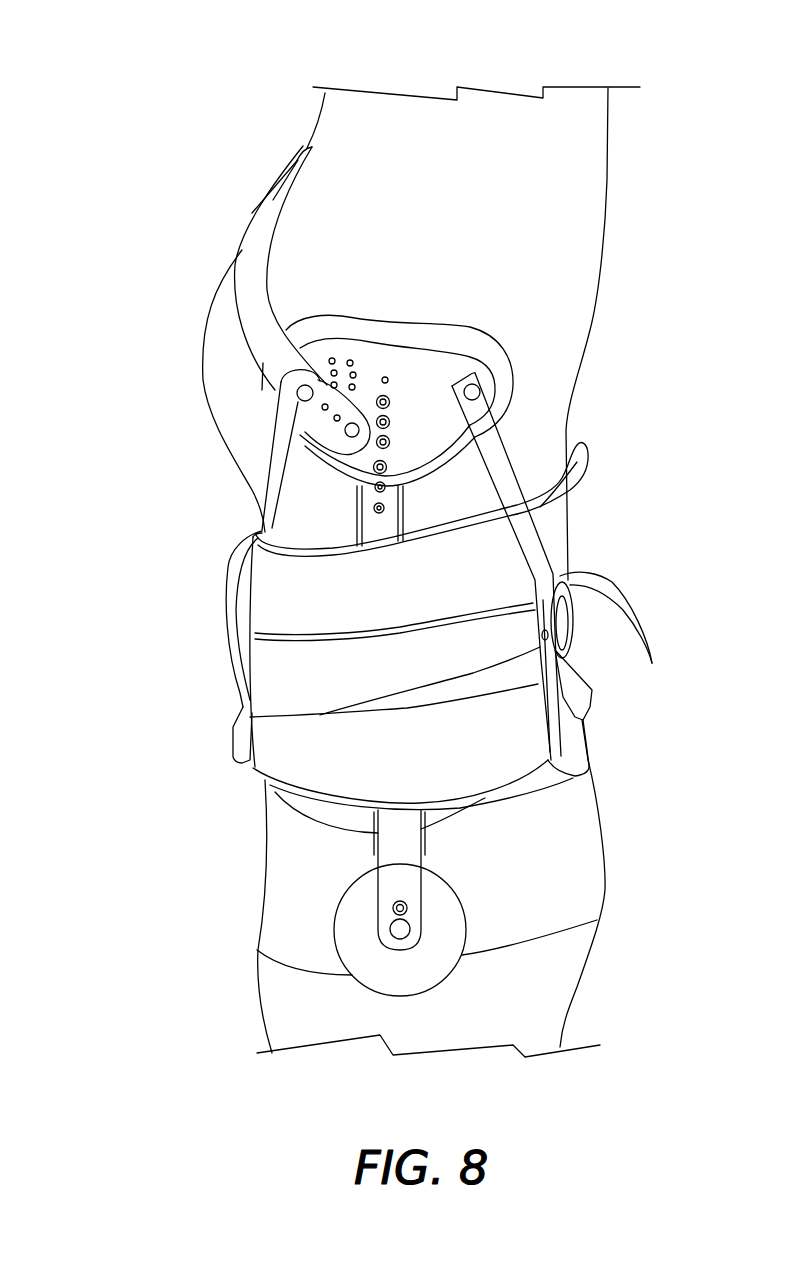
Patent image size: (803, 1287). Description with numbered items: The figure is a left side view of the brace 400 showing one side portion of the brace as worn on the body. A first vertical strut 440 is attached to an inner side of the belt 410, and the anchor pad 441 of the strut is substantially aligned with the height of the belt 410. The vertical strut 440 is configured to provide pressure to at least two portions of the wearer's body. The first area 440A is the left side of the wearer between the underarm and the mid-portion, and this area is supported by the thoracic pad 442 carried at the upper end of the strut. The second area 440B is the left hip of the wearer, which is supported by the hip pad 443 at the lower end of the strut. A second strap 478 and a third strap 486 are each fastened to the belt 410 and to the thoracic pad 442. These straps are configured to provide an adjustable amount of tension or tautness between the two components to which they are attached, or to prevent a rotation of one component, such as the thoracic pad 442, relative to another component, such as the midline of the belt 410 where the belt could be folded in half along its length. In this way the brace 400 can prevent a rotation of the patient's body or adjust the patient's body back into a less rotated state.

The brace 400 is at (183, 88).
The belt 410 is at (560, 543).
The first vertical strut 440 is at (445, 310).
The first area 440A is at (487, 389).
The second area 440B is at (450, 916).
The anchor pad 441 is at (317, 818).
The thoracic pad 442 is at (358, 316).
The hip pad 443 is at (470, 866).
The second strap 478 is at (270, 481).
The third strap 486 is at (533, 565).